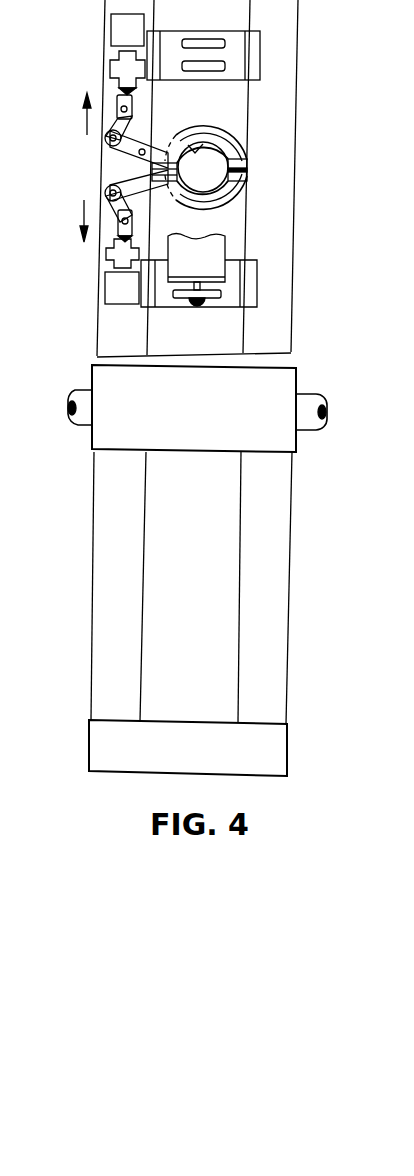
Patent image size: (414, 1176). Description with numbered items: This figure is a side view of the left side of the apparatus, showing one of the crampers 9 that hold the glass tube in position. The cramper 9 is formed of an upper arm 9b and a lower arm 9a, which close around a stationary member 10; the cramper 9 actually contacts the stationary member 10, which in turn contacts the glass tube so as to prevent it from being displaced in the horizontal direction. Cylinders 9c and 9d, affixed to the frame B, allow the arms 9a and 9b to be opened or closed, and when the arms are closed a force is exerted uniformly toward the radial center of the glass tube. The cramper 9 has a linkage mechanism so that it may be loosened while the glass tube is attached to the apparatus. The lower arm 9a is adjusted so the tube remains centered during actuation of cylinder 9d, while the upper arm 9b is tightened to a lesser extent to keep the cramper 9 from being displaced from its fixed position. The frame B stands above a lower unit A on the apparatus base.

The cramper 9 is at (245, 160).
The lower arm 9a is at (227, 200).
The upper arm 9b is at (230, 155).
The cylinder 9c is at (110, 65).
The cylinder 9d is at (113, 287).
The stationary member 10 is at (212, 218).
The lower unit A is at (103, 593).
The frame B is at (95, 332).